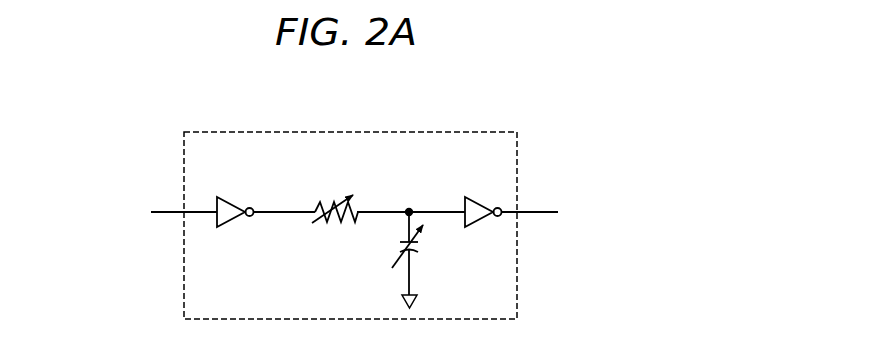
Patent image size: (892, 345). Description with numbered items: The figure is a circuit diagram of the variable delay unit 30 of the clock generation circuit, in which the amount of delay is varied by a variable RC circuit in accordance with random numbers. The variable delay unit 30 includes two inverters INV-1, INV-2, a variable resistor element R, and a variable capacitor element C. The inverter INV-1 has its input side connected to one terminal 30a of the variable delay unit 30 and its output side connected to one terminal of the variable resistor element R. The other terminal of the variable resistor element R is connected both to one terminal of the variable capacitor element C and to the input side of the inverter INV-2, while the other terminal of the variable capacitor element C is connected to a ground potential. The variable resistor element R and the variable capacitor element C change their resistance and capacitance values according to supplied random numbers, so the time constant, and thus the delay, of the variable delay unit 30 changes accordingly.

The variable delay unit 30 is at (472, 110).
The terminal 30a is at (168, 203).
The inverter INV-1 is at (230, 216).
The inverter INV-2 is at (478, 216).
The variable resistor element R is at (331, 189).
The variable capacitor element C is at (394, 246).